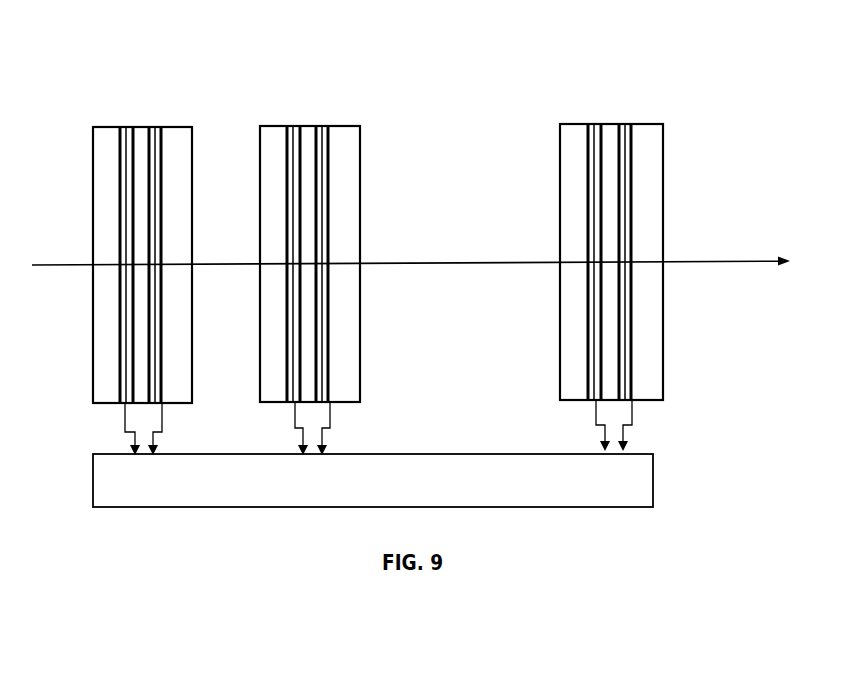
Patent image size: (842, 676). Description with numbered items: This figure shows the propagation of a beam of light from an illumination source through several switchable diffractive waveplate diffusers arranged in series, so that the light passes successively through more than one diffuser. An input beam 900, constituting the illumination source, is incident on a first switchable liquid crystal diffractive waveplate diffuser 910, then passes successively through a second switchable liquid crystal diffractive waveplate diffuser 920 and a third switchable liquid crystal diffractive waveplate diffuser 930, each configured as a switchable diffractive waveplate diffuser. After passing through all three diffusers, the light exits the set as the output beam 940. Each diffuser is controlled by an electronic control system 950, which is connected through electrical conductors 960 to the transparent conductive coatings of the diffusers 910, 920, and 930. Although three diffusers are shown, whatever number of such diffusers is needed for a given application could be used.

The input beam 900 is at (57, 265).
The first switchable liquid crystal diffractive waveplate diffuser 910 is at (123, 94).
The second switchable liquid crystal diffractive waveplate diffuser 920 is at (300, 96).
The third switchable liquid crystal diffractive waveplate diffuser 930 is at (590, 89).
The output beam 940 is at (713, 262).
The electronic control system 950 is at (638, 480).
The electrical conductor 960 is at (642, 423).